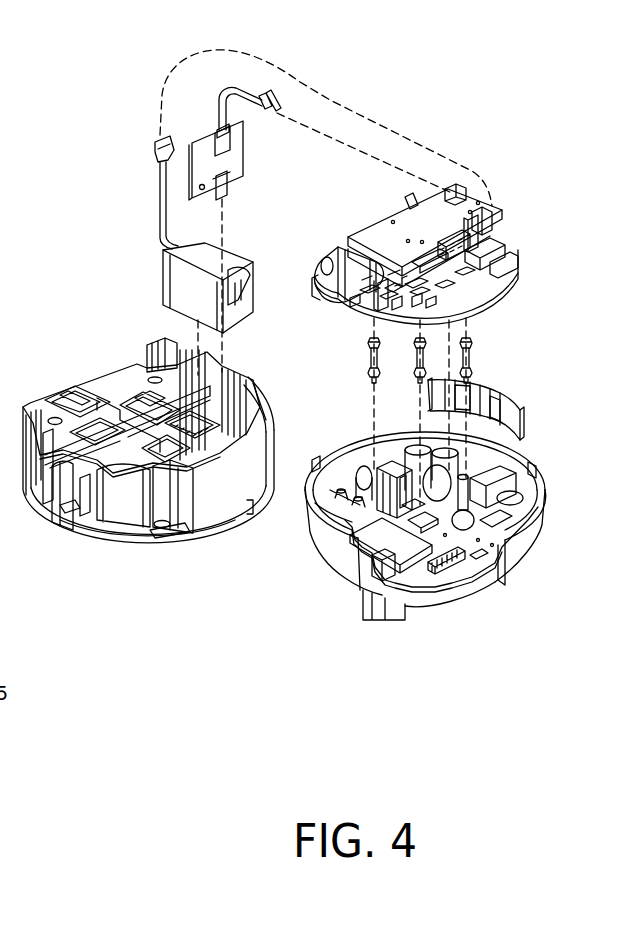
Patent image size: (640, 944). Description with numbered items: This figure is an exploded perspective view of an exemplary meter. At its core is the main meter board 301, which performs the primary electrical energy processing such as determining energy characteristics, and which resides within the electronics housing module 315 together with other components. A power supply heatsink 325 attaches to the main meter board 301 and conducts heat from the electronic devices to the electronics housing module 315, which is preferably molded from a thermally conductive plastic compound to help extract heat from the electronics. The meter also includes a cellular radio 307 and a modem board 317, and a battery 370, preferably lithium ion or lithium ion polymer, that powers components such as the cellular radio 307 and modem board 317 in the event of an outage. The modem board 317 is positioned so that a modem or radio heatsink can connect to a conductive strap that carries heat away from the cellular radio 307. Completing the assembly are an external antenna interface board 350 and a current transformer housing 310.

The main meter board 301 is at (450, 575).
The cellular radio 307 is at (386, 238).
The current transformer housing 310 is at (203, 525).
The electronics housing module 315 is at (337, 568).
The modem board 317 is at (503, 297).
The power supply heatsink 325 is at (518, 405).
The external antenna interface board 350 is at (240, 157).
The battery 370 is at (162, 285).